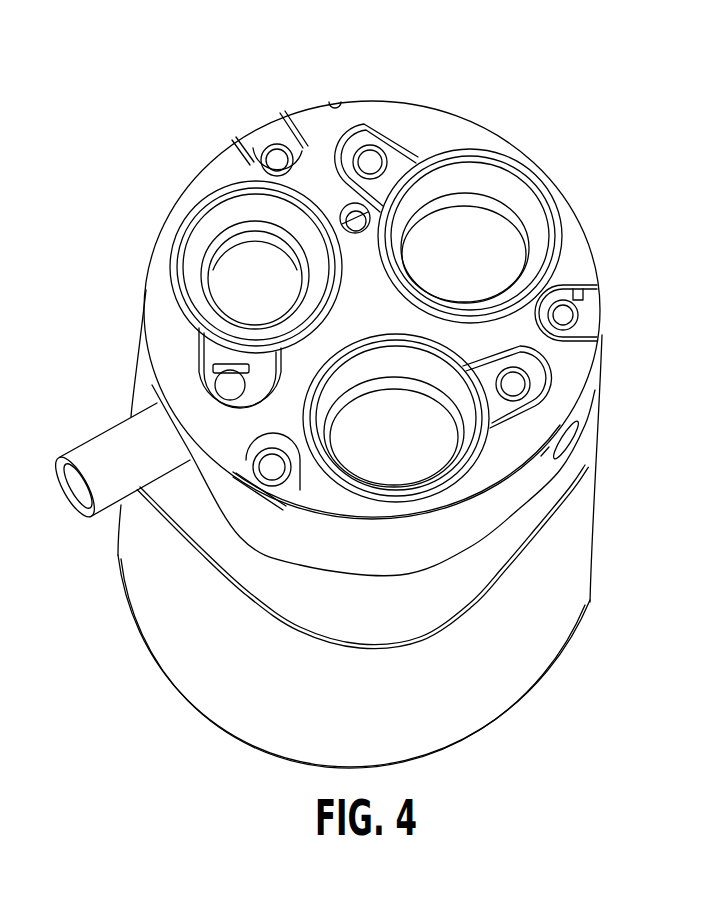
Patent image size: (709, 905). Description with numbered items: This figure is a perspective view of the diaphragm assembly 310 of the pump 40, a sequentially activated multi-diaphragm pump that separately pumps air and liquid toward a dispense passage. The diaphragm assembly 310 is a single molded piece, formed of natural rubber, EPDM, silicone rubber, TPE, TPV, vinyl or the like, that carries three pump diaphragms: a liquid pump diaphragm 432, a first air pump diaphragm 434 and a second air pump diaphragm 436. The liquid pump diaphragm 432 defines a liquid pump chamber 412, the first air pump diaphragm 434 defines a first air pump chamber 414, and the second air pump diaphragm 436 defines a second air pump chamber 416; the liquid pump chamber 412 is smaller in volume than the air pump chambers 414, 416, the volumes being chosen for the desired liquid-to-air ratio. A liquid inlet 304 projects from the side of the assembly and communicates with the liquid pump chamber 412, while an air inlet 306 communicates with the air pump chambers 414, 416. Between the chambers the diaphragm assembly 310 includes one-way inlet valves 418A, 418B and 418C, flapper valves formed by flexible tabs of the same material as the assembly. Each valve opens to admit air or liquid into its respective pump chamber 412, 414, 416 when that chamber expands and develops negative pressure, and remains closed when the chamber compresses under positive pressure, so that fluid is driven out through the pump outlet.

The pump 40 is at (114, 106).
The diaphragm assembly 310 is at (440, 124).
The liquid inlet 304 is at (113, 440).
The air inlet 306 is at (561, 447).
The liquid pump chamber 412 is at (237, 275).
The first air pump chamber 414 is at (457, 240).
The second air pump chamber 416 is at (417, 453).
The one-way inlet valve 418A is at (233, 387).
The one-way inlet valve 418B is at (374, 158).
The one-way inlet valve 418C is at (513, 390).
The liquid pump diaphragm 432 is at (269, 253).
The first air pump diaphragm 434 is at (497, 237).
The second air pump diaphragm 436 is at (380, 470).